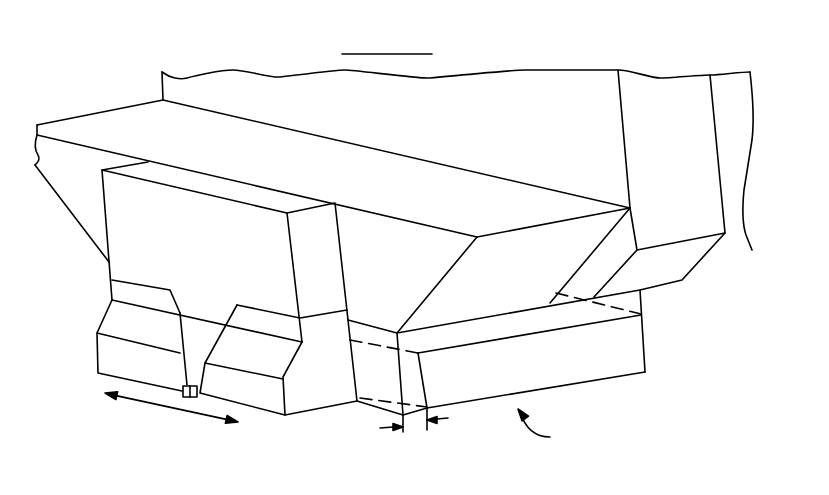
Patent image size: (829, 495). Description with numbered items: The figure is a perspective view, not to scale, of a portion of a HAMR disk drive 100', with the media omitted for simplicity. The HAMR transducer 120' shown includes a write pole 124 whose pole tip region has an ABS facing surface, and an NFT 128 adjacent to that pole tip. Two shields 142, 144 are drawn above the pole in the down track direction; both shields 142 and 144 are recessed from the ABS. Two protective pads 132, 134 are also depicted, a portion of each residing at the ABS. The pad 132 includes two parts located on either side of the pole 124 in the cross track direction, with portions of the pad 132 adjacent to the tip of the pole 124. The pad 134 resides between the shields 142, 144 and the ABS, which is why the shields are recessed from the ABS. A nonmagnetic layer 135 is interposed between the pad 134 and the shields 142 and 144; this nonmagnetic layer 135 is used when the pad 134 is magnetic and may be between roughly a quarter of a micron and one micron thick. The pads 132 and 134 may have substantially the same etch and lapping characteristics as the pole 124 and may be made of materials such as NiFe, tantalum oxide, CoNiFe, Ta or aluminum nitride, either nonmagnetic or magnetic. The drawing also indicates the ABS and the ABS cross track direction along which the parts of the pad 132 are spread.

The HAMR disk drive 100' is at (382, 261).
The HAMR transducer 120' is at (382, 261).
The write pole 124 is at (103, 228).
The NFT 128 is at (188, 400).
The pad 132 is at (97, 357).
The pad 134 is at (604, 380).
The nonmagnetic layer 135 is at (642, 303).
The shield 142 is at (48, 182).
The shield 144 is at (707, 255).